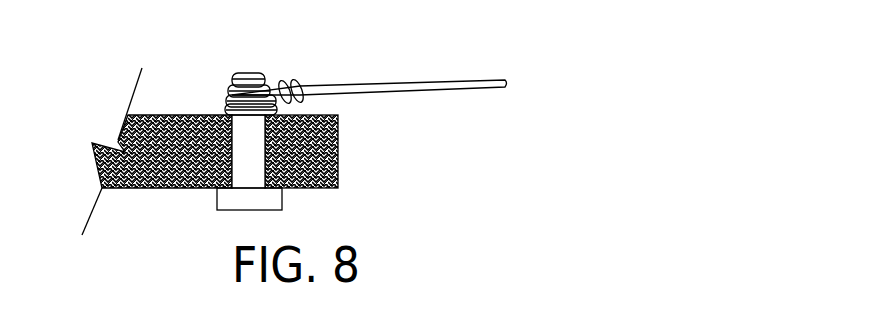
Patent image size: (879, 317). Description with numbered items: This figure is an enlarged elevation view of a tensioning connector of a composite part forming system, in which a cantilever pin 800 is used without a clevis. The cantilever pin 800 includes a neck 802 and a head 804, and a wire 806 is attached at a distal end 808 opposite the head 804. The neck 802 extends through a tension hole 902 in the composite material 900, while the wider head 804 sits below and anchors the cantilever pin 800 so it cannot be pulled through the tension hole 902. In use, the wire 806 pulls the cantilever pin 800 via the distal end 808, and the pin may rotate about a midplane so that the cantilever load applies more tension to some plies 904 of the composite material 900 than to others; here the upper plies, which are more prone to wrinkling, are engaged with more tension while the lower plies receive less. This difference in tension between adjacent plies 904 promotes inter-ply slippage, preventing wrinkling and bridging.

The cantilever pin 800 is at (213, 68).
The neck 802 is at (242, 132).
The head 804 is at (273, 200).
The wire 806 is at (443, 77).
The distal end 808 is at (255, 73).
The composite material 900 is at (177, 188).
The tension hole 902 is at (293, 108).
The plies 904 is at (338, 137).